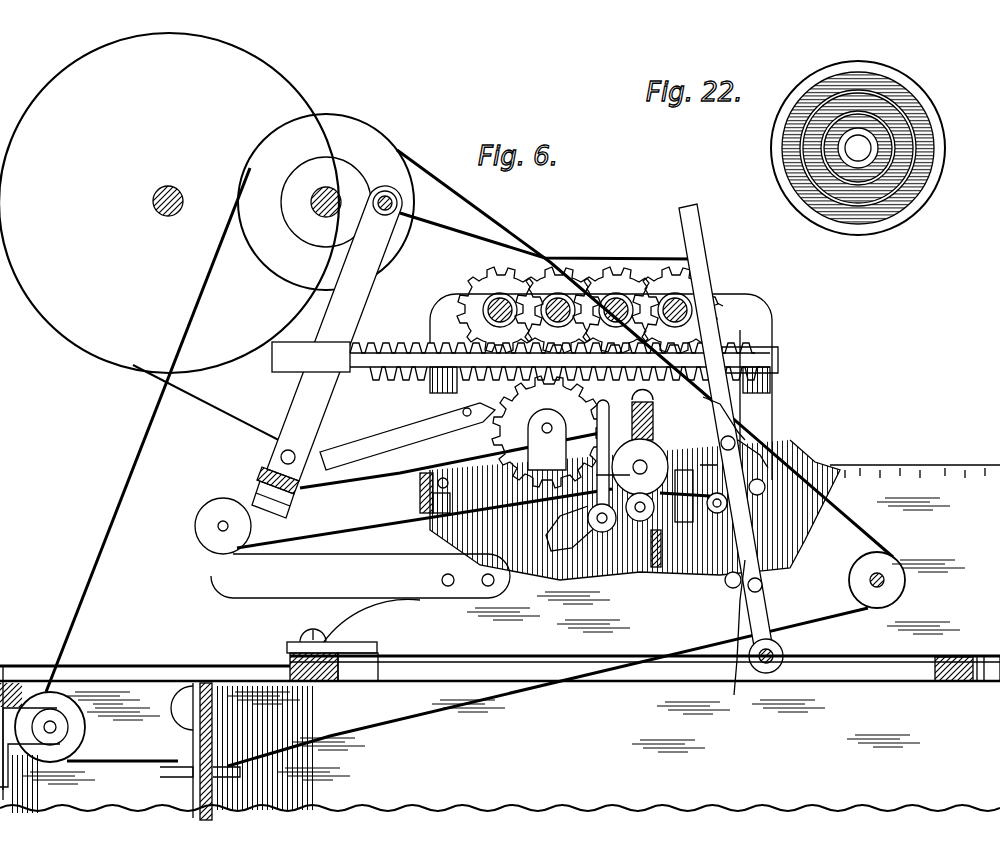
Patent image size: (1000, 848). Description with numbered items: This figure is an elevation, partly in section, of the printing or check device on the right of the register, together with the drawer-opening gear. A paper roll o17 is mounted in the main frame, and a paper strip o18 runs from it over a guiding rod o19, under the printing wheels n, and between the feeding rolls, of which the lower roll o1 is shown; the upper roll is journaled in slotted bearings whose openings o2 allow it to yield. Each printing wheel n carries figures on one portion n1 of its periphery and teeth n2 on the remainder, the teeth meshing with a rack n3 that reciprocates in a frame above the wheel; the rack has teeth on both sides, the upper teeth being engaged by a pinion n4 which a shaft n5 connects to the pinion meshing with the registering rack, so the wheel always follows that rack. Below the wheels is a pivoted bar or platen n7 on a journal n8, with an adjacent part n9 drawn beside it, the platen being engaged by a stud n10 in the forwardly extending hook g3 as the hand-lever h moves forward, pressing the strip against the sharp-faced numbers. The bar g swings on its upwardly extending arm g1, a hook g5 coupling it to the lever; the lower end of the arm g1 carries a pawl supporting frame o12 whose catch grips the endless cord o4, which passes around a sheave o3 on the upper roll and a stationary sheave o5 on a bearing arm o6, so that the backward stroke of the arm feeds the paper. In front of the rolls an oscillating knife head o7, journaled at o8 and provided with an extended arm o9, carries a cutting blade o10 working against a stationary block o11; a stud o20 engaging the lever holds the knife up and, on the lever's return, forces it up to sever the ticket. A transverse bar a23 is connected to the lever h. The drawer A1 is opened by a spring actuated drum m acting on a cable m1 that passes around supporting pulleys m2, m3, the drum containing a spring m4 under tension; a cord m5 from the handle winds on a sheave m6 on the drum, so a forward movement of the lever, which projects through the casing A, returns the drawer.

In FIG. 6, the paper roll o17 is at (169, 203).
In FIG. 6, the spring actuated drum m is at (326, 202).
In FIG. 22, the spring actuated drum m is at (940, 148).
In FIG. 6, the spool or sheave m6 is at (326, 202).
In FIG. 6, the cable m1 is at (505, 232).
In FIG. 6, the cord m5 is at (575, 243).
In FIG. 6, the supporting pulley m3 is at (50, 705).
In FIG. 6, the supporting pulley m2 is at (886, 567).
In FIG. 22, the spring m4 is at (905, 117).
In FIG. 6, the bar g is at (258, 474).
In FIG. 6, the upwardly extending arm g1 is at (334, 333).
In FIG. 6, the forwardly extending hook g3 is at (407, 436).
In FIG. 6, the hook g5 is at (760, 450).
In FIG. 6, the hand-lever h is at (731, 438).
In FIG. 6, the printing wheel n is at (548, 432).
In FIG. 6, the figure-bearing portion of periphery n1 is at (593, 476).
In FIG. 6, the teeth n2 is at (785, 650).
In FIG. 6, the rack n3 is at (400, 380).
In FIG. 6, the pinion n4 is at (478, 302).
In FIG. 6, the shaft n5 is at (680, 310).
In FIG. 6, the pivoted bar or platen n7 is at (547, 540).
In FIG. 6, the journal n8 is at (600, 525).
In FIG. 6, the plunger n9 is at (597, 440).
In FIG. 6, the stud n10 is at (448, 407).
In FIG. 6, the feeding roll o1 is at (640, 521).
In FIG. 6, the slotted bearing openings o2 is at (656, 432).
In FIG. 6, the sheave o3 is at (640, 467).
In FIG. 6, the endless cord or cable o4 is at (355, 520).
In FIG. 6, the stationary supporting sheave o5 is at (195, 526).
In FIG. 6, the bearing arm o6 is at (360, 576).
In FIG. 6, the oscillating knife head o7 is at (717, 513).
In FIG. 6, the journal of knife head o8 is at (763, 483).
In FIG. 6, the extended arm o9 is at (741, 578).
In FIG. 6, the cutting blade o10 is at (672, 478).
In FIG. 6, the stationary block o11 is at (690, 478).
In FIG. 6, the pawl supporting frame o12 is at (280, 506).
In FIG. 6, the paper strip or ribbon o18 is at (232, 421).
In FIG. 6, the guiding rod o19 is at (440, 480).
In FIG. 6, the stud o20 is at (745, 631).
In FIG. 6, the transverse bar a23 is at (762, 587).
In FIG. 6, the outer casing A is at (500, 714).
In FIG. 6, the drawer A1 is at (500, 659).